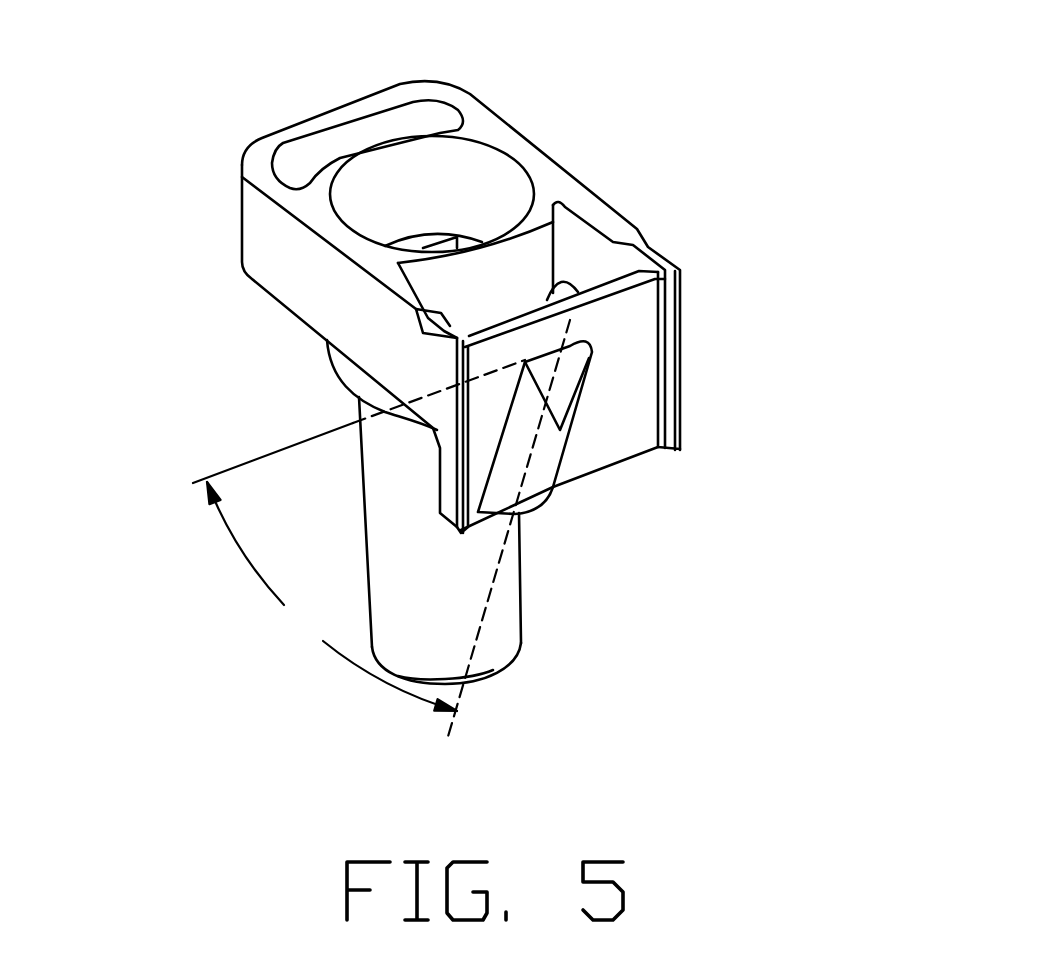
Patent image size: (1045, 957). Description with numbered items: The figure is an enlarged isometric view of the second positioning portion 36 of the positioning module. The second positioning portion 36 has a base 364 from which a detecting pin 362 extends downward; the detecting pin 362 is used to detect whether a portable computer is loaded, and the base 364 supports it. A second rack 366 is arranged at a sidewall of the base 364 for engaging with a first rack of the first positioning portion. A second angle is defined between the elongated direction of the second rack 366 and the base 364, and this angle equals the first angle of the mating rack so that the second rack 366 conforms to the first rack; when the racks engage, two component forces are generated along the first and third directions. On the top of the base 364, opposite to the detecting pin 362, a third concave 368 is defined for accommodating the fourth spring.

The second positioning portion 36 is at (478, 389).
The detecting pin 362 is at (500, 627).
The base 364 is at (280, 258).
The second rack 366 is at (557, 378).
The third concave 368 is at (400, 213).